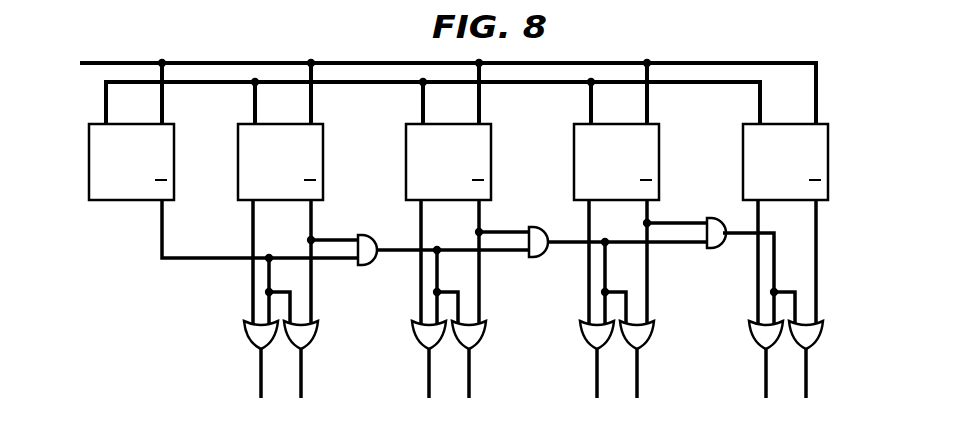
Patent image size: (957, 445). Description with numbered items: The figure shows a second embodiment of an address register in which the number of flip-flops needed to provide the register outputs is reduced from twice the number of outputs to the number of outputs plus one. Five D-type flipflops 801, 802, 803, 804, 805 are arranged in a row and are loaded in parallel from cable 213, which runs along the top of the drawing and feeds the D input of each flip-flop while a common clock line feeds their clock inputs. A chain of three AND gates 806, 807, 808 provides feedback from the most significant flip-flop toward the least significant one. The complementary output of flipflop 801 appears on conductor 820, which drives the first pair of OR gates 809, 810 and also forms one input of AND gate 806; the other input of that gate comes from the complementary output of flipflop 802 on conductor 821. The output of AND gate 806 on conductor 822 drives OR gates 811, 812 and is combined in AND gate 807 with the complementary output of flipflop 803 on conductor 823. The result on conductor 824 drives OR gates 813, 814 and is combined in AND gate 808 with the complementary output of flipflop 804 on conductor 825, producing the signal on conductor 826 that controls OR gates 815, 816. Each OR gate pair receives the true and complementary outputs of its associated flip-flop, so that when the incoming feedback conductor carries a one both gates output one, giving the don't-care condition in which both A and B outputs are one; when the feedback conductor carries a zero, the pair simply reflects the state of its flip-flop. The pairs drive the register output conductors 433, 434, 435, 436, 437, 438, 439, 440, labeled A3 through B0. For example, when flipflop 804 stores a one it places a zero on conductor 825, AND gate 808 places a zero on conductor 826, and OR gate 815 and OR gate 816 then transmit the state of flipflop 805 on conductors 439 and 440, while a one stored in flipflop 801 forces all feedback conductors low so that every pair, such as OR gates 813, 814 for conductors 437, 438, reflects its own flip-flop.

The cable 213 is at (90, 63).
The flipflop 801 is at (174, 149).
The flipflop 802 is at (323, 149).
The flipflop 803 is at (491, 149).
The flipflop 804 is at (659, 148).
The flipflop 805 is at (828, 143).
The AND gate 806 is at (377, 241).
The AND gate 807 is at (536, 229).
The AND gate 808 is at (727, 217).
The OR gate 809 is at (243, 332).
The OR gate 810 is at (319, 333).
The OR gate 811 is at (413, 332).
The OR gate 812 is at (486, 332).
The OR gate 813 is at (581, 332).
The OR gate 814 is at (655, 332).
The OR gate 815 is at (749, 332).
The OR gate 816 is at (823, 332).
The conductor 820 is at (192, 262).
The conductor 821 is at (323, 235).
The conductor 822 is at (398, 252).
The conductor 823 is at (492, 233).
The conductor 824 is at (566, 243).
The conductor 825 is at (668, 222).
The conductor 826 is at (736, 235).
The output conductor 433 is at (259, 362).
The output conductor 434 is at (302, 362).
The output conductor 435 is at (428, 363).
The output conductor 436 is at (470, 362).
The output conductor 437 is at (596, 362).
The output conductor 438 is at (638, 373).
The output conductor 439 is at (765, 360).
The output conductor 440 is at (808, 370).